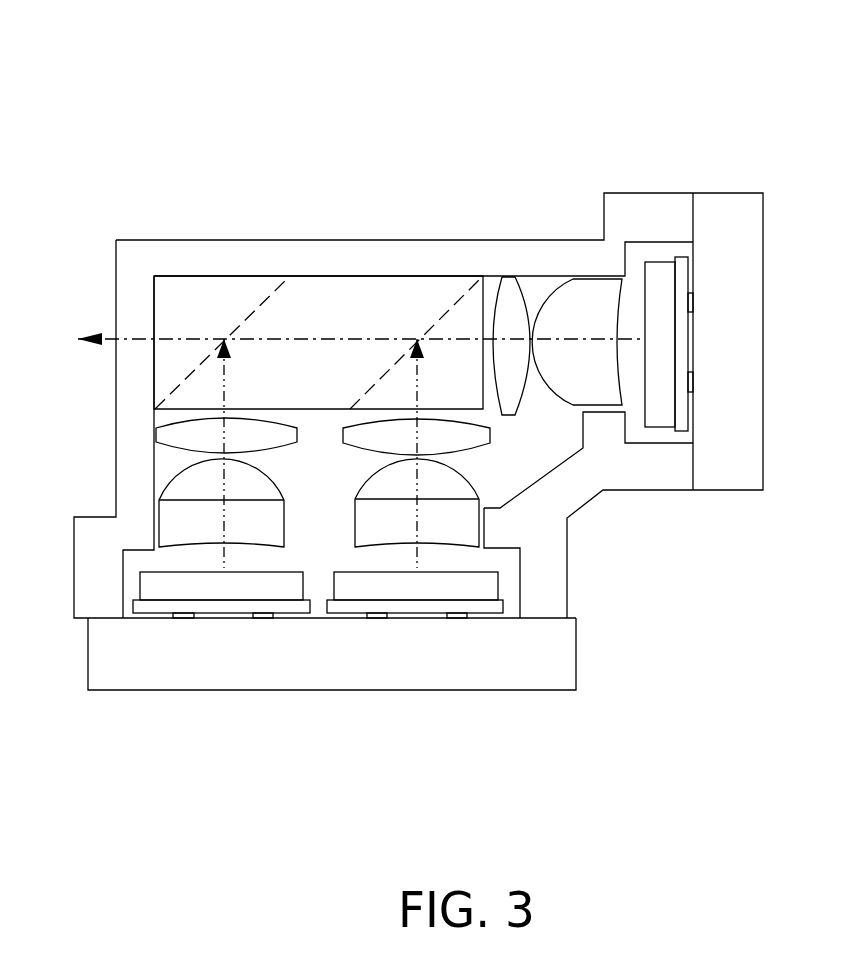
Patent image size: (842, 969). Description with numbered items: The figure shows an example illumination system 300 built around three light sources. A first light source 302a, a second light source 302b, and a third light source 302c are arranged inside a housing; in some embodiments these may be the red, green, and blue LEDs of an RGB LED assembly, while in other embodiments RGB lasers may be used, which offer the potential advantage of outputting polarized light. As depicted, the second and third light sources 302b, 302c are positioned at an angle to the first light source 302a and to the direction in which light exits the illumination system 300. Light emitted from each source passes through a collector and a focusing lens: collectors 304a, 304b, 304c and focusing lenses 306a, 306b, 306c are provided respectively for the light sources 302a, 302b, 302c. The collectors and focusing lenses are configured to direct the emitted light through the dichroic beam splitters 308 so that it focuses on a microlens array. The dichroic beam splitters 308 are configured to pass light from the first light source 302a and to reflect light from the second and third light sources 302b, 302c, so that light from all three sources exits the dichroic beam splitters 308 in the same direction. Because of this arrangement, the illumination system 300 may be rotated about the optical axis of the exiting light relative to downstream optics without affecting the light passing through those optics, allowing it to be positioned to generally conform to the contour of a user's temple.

The illumination system 300 is at (618, 58).
The first light source 302a is at (706, 343).
The second light source 302b is at (416, 632).
The third light source 302c is at (220, 632).
The collector 304a is at (590, 277).
The collector 304b is at (479, 499).
The collector 304c is at (159, 500).
The focusing lens 306a is at (513, 277).
The focusing lens 306b is at (490, 428).
The focusing lens 306c is at (160, 428).
The dichroic beam splitters 308 is at (337, 250).